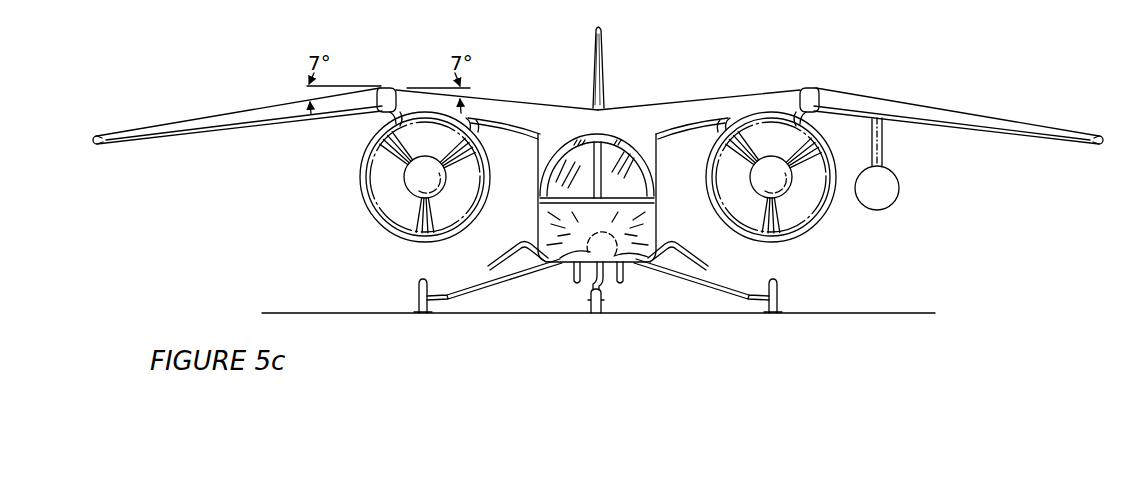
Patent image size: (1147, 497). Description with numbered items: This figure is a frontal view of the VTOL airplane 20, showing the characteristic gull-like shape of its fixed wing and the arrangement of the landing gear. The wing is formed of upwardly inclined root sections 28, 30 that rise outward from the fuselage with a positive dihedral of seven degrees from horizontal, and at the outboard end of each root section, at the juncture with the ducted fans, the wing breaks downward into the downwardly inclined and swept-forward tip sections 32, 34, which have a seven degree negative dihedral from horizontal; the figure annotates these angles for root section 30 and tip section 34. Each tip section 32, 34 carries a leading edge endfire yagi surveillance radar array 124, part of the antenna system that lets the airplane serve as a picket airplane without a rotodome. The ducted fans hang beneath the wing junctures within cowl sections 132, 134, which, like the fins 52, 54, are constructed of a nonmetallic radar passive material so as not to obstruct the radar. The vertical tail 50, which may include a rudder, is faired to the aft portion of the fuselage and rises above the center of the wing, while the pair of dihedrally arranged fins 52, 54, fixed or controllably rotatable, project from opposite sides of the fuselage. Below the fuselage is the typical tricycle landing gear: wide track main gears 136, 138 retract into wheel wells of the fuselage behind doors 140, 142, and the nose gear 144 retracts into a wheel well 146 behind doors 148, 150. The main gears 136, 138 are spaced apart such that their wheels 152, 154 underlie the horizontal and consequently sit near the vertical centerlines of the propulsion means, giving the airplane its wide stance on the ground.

The VTOL airplane 20 is at (744, 60).
The root section 28 is at (688, 102).
The root section 30 is at (507, 82).
The tip section 32 is at (1089, 139).
The tip section 34 is at (96, 135).
The vertical tail 50 is at (603, 38).
The fin 52 is at (723, 284).
The fin 54 is at (478, 282).
The leading edge endfire yagi surveillance radar array 124 is at (242, 117).
The cowl section 132 is at (816, 226).
The cowl section 134 is at (360, 192).
The main gear 136 is at (794, 279).
The main gear 138 is at (414, 270).
The door 140 is at (684, 230).
The door 142 is at (522, 242).
The nose gear 144 is at (606, 304).
The wheel well 146 is at (572, 270).
The door 148 is at (616, 276).
The door 150 is at (587, 303).
The wheel 152 is at (778, 305).
The wheel 154 is at (417, 302).